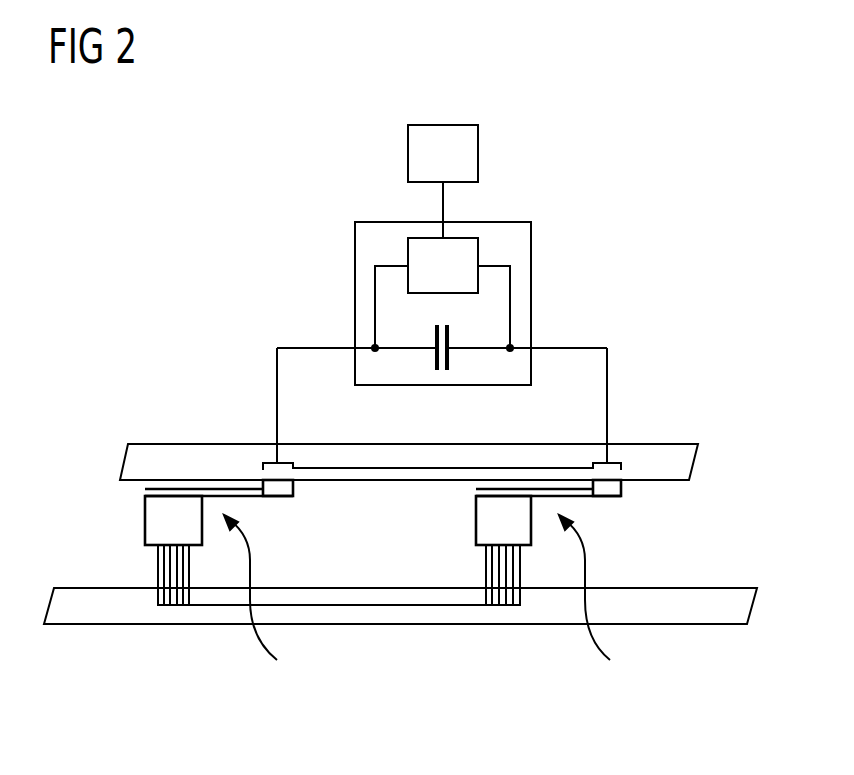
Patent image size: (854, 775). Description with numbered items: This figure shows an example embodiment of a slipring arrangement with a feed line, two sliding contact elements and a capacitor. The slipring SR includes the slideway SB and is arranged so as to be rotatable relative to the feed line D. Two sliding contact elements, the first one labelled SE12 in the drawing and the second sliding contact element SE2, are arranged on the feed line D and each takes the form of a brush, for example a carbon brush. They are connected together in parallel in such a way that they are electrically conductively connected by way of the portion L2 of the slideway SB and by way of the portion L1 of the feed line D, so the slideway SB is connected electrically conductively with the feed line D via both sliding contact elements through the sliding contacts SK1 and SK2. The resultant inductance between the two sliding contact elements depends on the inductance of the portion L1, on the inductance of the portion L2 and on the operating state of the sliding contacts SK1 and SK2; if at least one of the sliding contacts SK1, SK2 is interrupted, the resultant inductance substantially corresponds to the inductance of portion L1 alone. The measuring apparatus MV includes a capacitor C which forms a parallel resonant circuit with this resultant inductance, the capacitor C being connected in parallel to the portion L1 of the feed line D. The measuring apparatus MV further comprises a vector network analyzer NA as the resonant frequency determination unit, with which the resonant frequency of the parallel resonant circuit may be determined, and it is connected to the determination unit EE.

The determination unit EE is at (441, 123).
The measuring apparatus MV is at (531, 290).
The vector network analyzer NA is at (408, 252).
The capacitor C is at (437, 338).
The feed line D is at (655, 454).
The portion of the feed line L1 is at (324, 466).
The sliding contact SK1 is at (170, 600).
The sliding contact SK2 is at (500, 600).
The slipring SR is at (400, 570).
The slideway SB is at (694, 600).
The portion of the slideway L2 is at (408, 606).
The first sensor electrode SE12 is at (271, 608).
The sliding contact element SE2 is at (597, 608).